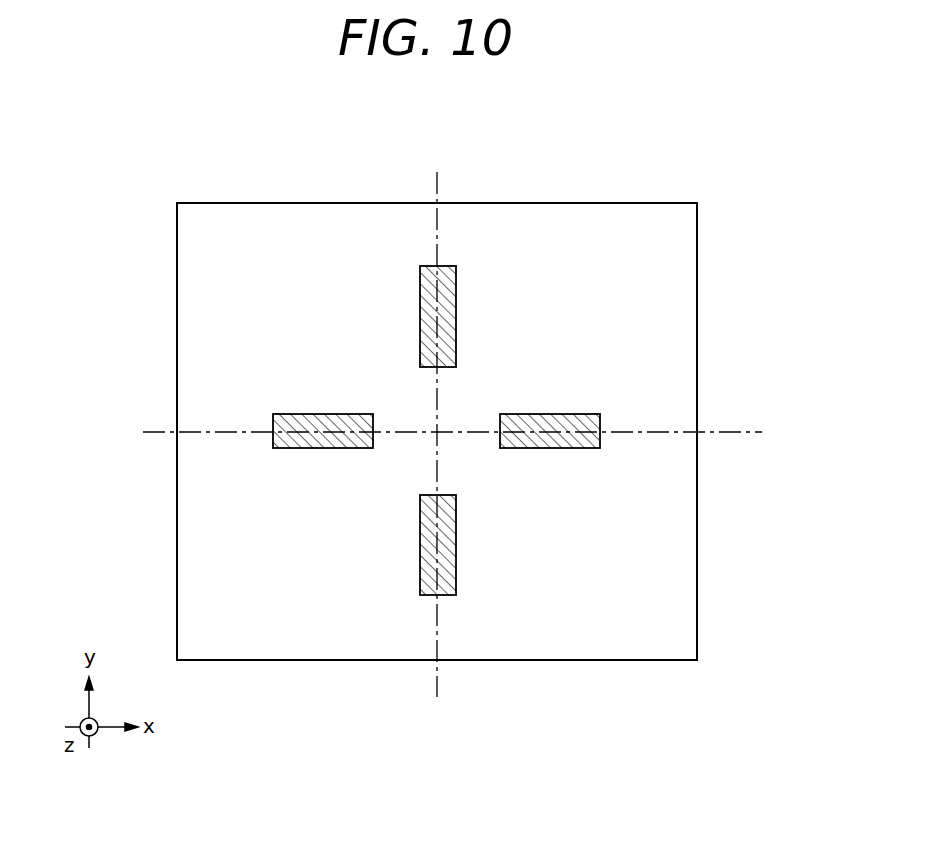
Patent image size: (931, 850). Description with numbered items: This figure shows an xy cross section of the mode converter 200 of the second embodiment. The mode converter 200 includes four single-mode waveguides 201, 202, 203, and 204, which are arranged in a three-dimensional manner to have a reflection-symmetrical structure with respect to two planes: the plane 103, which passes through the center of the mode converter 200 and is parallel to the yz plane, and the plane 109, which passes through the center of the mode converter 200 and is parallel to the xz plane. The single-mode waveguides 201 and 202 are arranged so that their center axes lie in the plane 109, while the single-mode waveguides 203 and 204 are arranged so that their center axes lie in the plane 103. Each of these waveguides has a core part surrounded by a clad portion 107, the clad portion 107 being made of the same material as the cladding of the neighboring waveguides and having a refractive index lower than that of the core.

The mode converter 200 is at (520, 176).
The single-mode waveguide 201 is at (567, 413).
The single-mode waveguide 202 is at (306, 413).
The single-mode waveguide 203 is at (420, 297).
The single-mode waveguide 204 is at (420, 546).
The clad portion 107 is at (676, 531).
The plane 109 is at (739, 432).
The plane 103 is at (437, 678).